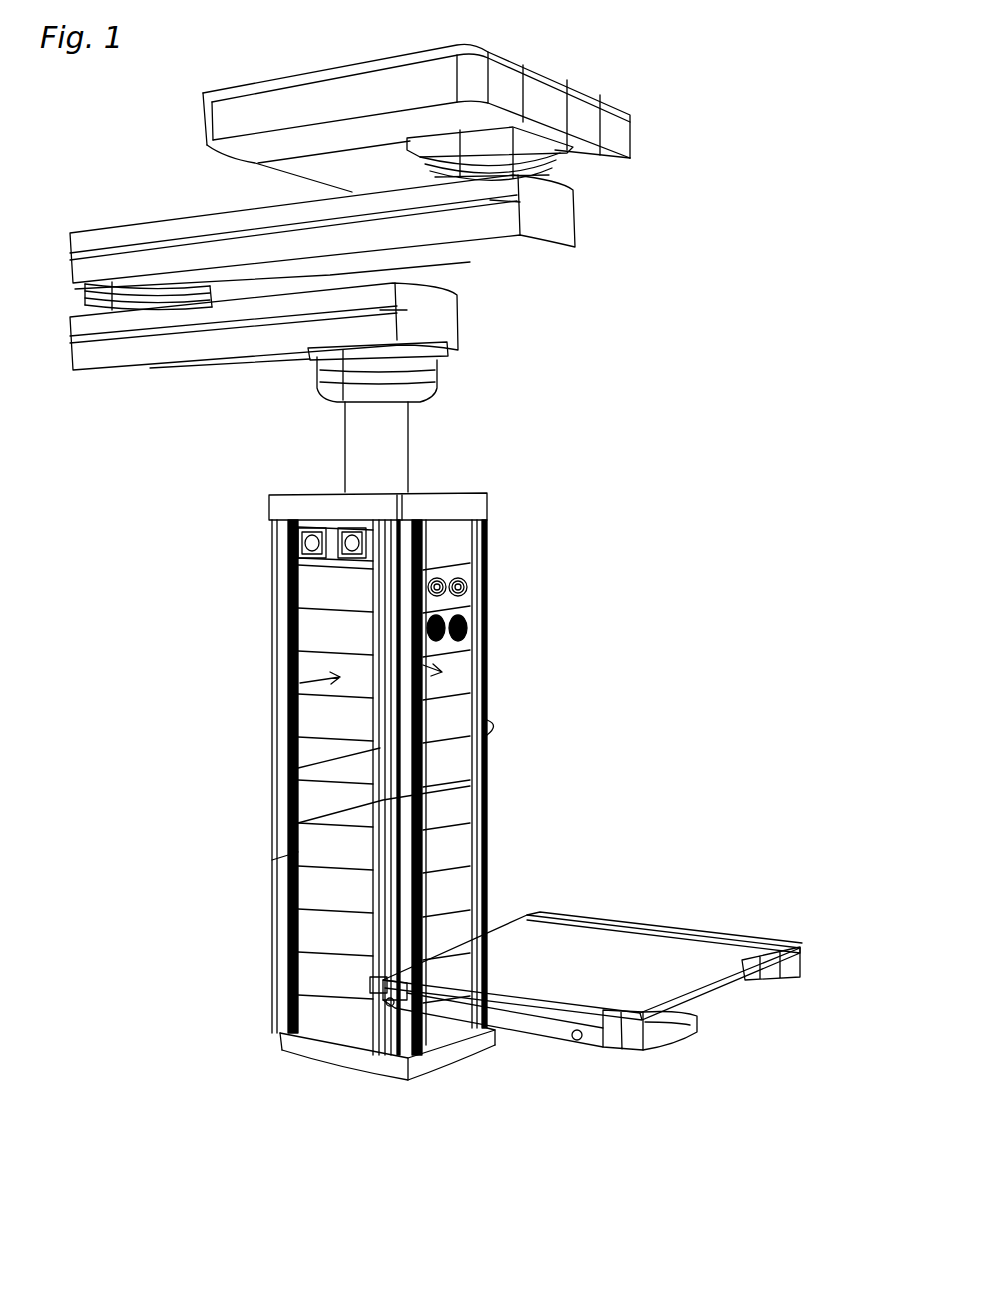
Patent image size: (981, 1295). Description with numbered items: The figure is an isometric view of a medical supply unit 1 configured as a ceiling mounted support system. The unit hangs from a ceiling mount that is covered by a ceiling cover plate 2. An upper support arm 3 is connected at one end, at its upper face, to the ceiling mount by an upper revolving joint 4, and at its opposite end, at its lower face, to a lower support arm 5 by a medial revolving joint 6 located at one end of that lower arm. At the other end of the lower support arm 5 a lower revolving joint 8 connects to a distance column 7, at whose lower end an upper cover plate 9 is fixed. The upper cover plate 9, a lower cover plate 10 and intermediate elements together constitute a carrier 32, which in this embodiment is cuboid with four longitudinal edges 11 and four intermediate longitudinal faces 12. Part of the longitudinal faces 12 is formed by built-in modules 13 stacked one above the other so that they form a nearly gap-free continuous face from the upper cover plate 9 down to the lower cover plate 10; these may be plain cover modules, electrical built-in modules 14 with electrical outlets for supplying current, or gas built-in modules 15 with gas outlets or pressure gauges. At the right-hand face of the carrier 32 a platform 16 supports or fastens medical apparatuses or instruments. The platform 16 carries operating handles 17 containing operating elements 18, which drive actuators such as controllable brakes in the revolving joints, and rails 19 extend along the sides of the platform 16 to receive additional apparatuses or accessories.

The medical supply unit 1 is at (692, 304).
The ceiling cover plate 2 is at (712, 152).
The upper support arm 3 is at (548, 308).
The upper revolving joint 4 is at (714, 218).
The lower support arm 5 is at (264, 394).
The medial revolving joint 6 is at (140, 478).
The distance column 7 is at (355, 427).
The lower revolving joint 8 is at (558, 422).
The upper cover plate 9 is at (165, 612).
The lower cover plate 10 is at (180, 1105).
The longitudinal edges 11 is at (285, 763).
The longitudinal faces 12 is at (277, 692).
The built-in modules 13 is at (167, 930).
The electrical built-in modules 14 is at (595, 531).
The gas built-in modules 15 is at (628, 618).
The platform 16 is at (560, 960).
The operating handles 17 is at (712, 1093).
The operating elements 18 is at (700, 1033).
The rails 19 is at (557, 1142).
The carrier 32 is at (640, 695).